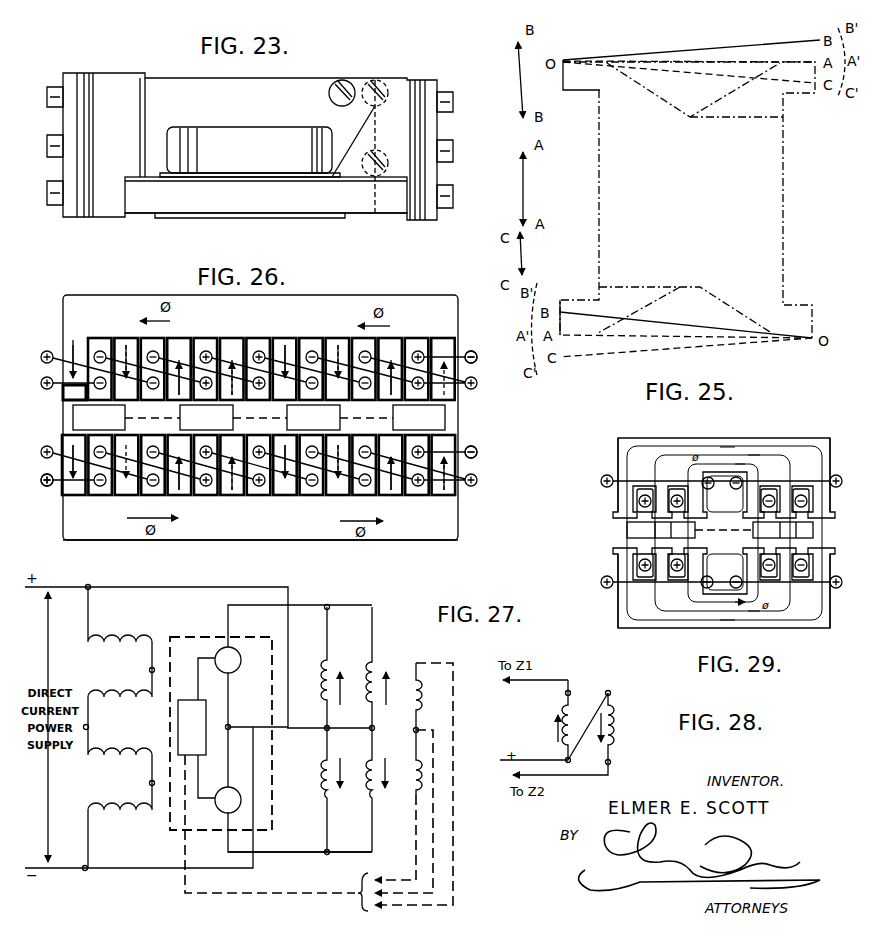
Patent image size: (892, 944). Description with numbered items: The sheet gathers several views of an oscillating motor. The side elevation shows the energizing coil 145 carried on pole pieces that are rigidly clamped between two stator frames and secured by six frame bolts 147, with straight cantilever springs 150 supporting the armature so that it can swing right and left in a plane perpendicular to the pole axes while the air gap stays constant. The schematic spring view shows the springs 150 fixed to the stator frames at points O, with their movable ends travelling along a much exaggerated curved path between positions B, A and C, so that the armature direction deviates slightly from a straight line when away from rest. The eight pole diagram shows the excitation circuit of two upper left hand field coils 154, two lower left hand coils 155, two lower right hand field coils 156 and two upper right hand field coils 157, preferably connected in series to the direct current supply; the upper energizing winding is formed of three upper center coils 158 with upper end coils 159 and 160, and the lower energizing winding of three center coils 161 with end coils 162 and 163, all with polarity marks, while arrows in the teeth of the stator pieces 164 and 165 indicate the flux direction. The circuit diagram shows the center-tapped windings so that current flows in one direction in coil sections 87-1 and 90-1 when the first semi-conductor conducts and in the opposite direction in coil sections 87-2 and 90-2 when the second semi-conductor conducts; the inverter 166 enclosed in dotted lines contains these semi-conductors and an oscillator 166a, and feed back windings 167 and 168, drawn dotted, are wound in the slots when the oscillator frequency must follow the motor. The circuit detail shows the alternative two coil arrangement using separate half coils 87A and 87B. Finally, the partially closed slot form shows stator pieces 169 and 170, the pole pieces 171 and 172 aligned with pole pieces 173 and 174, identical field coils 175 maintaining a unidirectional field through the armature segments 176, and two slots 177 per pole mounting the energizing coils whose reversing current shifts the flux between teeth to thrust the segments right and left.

In FIG. 23, the energizing coil 145 is at (272, 158).
In FIG. 23, the frame bolts 147 is at (343, 82).
In FIG. 25, the cantilever springs 150 is at (750, 47).
In FIG. 26, the upper left hand field coils 154 is at (186, 355).
In FIG. 26, the lower left hand field coils 155 is at (236, 490).
In FIG. 26, the lower right hand field coils 156 is at (440, 492).
In FIG. 26, the upper right hand field coils 157 is at (396, 356).
In FIG. 26, the upper center coils 158 is at (340, 354).
In FIG. 26, the upper end coil 159 is at (63, 392).
In FIG. 26, the upper end coil 160 is at (479, 347).
In FIG. 26, the lower center coils 161 is at (398, 490).
In FIG. 26, the lower end coil 162 is at (62, 485).
In FIG. 26, the lower end coil 163 is at (461, 455).
In FIG. 26, the stator piece 164 is at (345, 306).
In FIG. 26, the stator piece 165 is at (314, 533).
In FIG. 27, the inverter 166 is at (197, 637).
In FIG. 27, the oscillator 166a is at (178, 727).
In FIG. 27, the feed back winding 167 is at (414, 784).
In FIG. 27, the feed back winding 168 is at (414, 697).
In FIG. 27, the coil section 87-1 is at (328, 690).
In FIG. 27, the coil section 87-2 is at (327, 784).
In FIG. 27, the coil section 90-1 is at (366, 672).
In FIG. 27, the coil section 90-2 is at (368, 788).
In FIG. 28, the half coil 87A is at (580, 705).
In FIG. 28, the half coil 87B is at (616, 736).
In FIG. 29, the stator piece 169 is at (688, 442).
In FIG. 29, the stator piece 170 is at (716, 628).
In FIG. 29, the pole piece 171 is at (638, 460).
In FIG. 29, the pole piece 172 is at (805, 468).
In FIG. 29, the pole piece 173 is at (638, 602).
In FIG. 29, the pole piece 174 is at (806, 608).
In FIG. 29, the field coils 175 is at (822, 590).
In FIG. 29, the armature segments 176 is at (813, 532).
In FIG. 29, the slots 177 is at (802, 578).